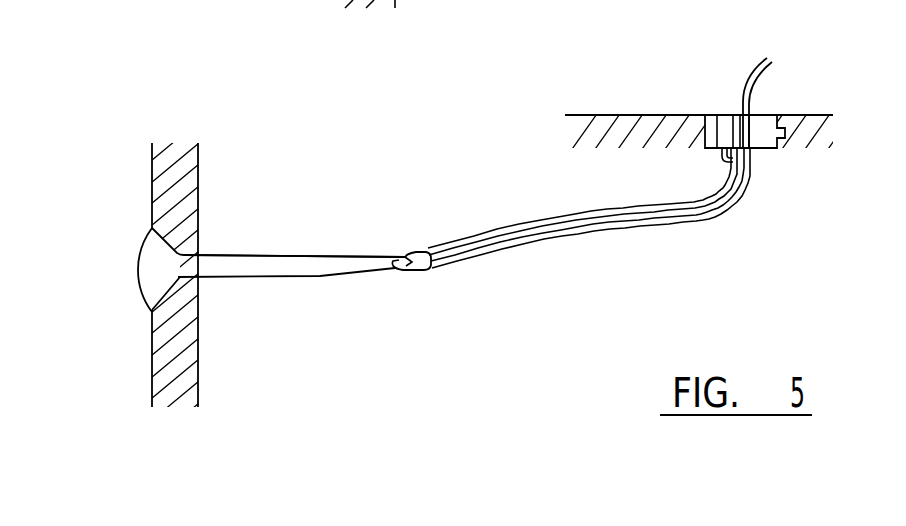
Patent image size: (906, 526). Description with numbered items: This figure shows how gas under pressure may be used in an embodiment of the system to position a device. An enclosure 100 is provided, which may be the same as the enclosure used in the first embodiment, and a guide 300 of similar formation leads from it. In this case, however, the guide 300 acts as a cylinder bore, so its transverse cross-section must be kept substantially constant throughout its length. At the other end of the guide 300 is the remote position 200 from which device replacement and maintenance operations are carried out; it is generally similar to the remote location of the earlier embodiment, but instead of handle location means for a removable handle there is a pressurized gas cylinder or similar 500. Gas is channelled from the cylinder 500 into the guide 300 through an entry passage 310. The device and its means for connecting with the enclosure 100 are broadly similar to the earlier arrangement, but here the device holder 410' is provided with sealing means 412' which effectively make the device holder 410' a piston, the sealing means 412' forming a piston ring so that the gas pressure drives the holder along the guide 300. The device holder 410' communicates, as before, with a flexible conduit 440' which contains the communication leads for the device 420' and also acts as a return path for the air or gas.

The enclosure 100 is at (127, 294).
The remote position 200 is at (700, 111).
The guide 300 is at (273, 255).
The entry passage 310 is at (721, 156).
The device holder 410' is at (439, 212).
The sealing means 412' is at (393, 210).
The device 420' is at (364, 317).
The flexible conduit 440' is at (589, 237).
The pressurized gas cylinder 500 is at (720, 120).